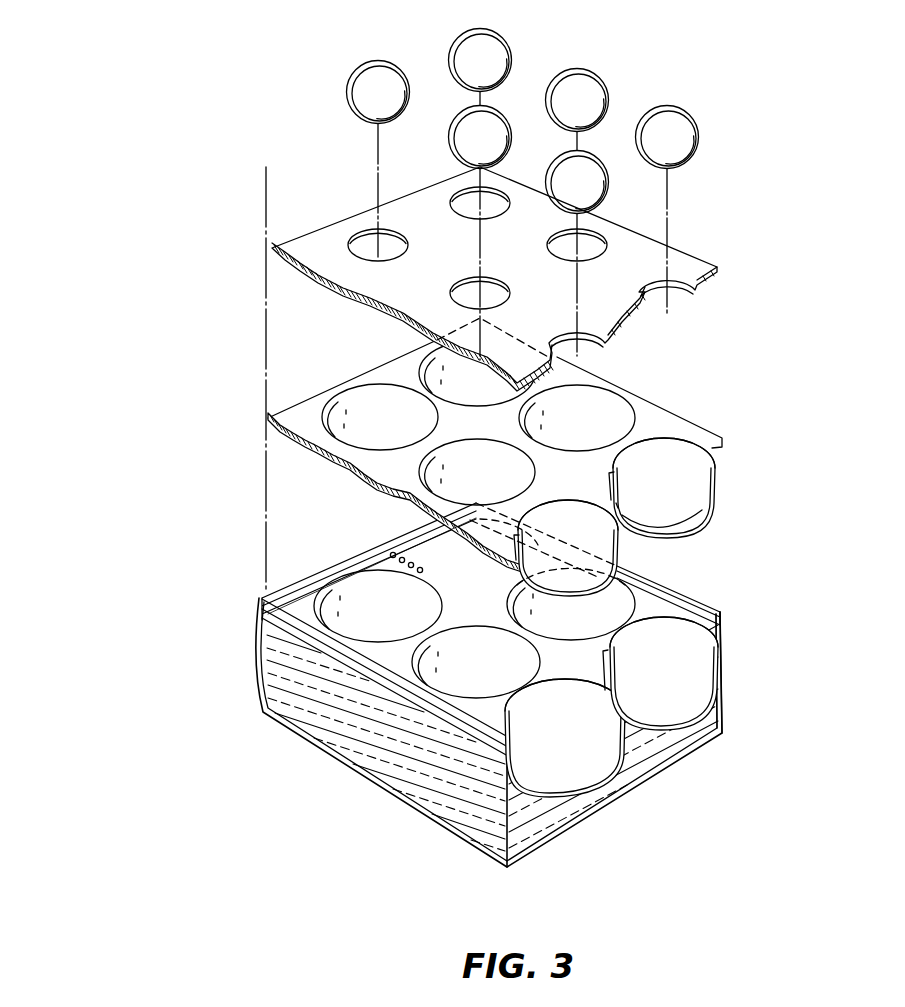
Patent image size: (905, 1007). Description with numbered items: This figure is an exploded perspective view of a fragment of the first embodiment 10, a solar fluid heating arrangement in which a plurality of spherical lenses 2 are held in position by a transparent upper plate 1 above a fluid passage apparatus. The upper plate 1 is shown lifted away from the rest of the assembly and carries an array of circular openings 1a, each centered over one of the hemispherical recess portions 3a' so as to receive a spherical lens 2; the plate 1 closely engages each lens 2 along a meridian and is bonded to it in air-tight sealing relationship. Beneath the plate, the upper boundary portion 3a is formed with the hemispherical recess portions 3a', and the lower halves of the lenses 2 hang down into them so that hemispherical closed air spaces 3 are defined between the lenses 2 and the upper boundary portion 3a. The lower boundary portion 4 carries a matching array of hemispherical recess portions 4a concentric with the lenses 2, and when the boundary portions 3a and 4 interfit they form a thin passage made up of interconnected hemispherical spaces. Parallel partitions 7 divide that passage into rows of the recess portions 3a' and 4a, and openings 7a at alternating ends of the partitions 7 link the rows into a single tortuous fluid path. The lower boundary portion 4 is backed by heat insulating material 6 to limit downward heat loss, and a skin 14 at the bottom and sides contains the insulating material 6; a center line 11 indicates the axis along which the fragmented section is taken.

The transparent upper plate 1 is at (632, 243).
The circular openings 1a is at (367, 248).
The spherical lenses 2 is at (462, 40).
The hemispherical closed air spaces 3 is at (350, 408).
The upper boundary portion 3a is at (495, 456).
The hemispherical recess portions 3a' is at (688, 526).
The lower boundary portion 4 is at (665, 608).
The hemispherical recess portions 4a is at (360, 592).
The heat insulating material 6 is at (633, 773).
The partitions 7 is at (347, 648).
The openings 7a is at (393, 552).
The first embodiment 10 is at (682, 67).
The center line 11 is at (270, 583).
The skin 14 is at (707, 743).